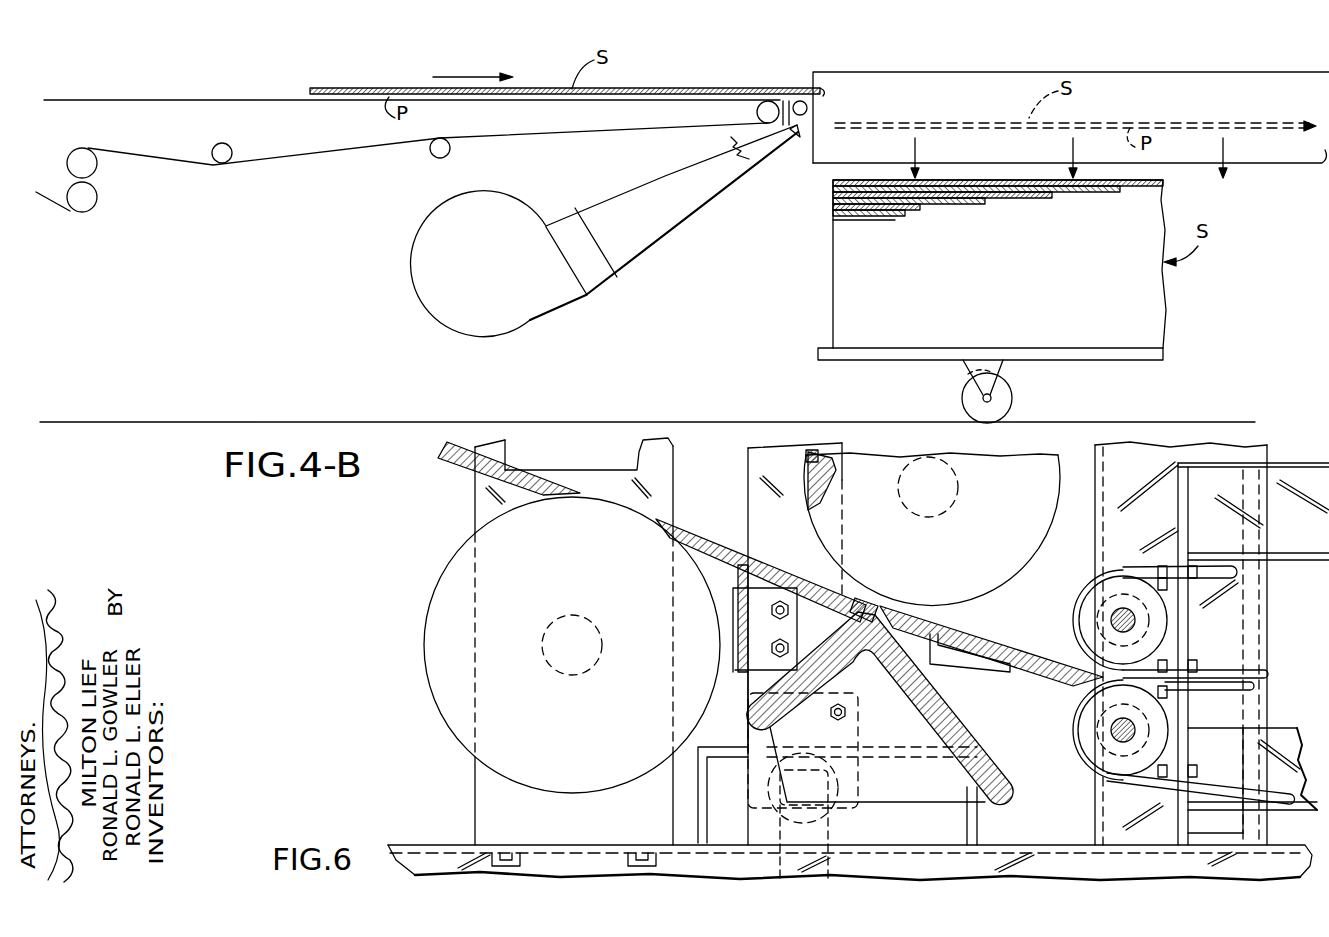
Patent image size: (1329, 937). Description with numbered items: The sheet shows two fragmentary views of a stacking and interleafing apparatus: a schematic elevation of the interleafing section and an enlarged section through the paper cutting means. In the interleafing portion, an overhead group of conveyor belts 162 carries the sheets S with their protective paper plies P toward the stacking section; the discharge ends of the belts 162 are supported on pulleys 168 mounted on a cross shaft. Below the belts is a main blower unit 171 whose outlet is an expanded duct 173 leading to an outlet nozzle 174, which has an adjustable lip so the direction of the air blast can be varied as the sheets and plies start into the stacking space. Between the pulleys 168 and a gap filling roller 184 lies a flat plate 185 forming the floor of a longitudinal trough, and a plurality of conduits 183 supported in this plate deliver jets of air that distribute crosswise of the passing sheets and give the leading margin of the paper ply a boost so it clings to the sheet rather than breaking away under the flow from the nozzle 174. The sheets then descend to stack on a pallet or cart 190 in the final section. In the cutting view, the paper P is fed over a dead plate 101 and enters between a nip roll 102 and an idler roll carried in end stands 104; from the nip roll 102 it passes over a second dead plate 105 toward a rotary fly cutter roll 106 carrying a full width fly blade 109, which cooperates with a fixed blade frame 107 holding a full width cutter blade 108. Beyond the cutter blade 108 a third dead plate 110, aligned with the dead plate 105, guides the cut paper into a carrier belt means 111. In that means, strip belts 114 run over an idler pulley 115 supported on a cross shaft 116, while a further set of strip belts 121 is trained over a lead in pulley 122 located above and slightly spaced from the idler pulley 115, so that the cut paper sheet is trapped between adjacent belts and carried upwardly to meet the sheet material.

In FIG. 4B, the conveyor belts 162 is at (161, 98).
In FIG. 4B, the pulleys 168 is at (757, 112).
In FIG. 4B, the main blower unit 171 is at (432, 240).
In FIG. 4B, the expanded duct 173 is at (666, 222).
In FIG. 4B, the outlet nozzle 174 is at (752, 150).
In FIG. 4B, the conduits 183 is at (787, 122).
In FIG. 4B, the gap filling roller 184 is at (798, 101).
In FIG. 4B, the flat plate 185 is at (783, 102).
In FIG. 4B, the pallet or cart 190 is at (1128, 360).
In FIG. 6, the dead plate 101 is at (458, 468).
In FIG. 6, the nip roll 102 is at (427, 626).
In FIG. 6, the end stands 104 is at (598, 456).
In FIG. 6, the second dead plate 105 is at (706, 528).
In FIG. 6, the rotary fly cutter roll 106 is at (836, 470).
In FIG. 6, the fixed blade frame 107 is at (993, 712).
In FIG. 6, the cutter blade 108 is at (880, 607).
In FIG. 6, the fly blade 109 is at (806, 461).
In FIG. 6, the third dead plate 110 is at (1022, 628).
In FIG. 6, the carrier belt means 111 is at (1278, 640).
In FIG. 6, the strip belts 114 is at (1215, 781).
In FIG. 6, the idler pulley 115 is at (1085, 720).
In FIG. 6, the cross shaft 116 is at (1112, 731).
In FIG. 6, the strip belts 121 is at (1208, 562).
In FIG. 6, the lead in pulley 122 is at (1090, 600).